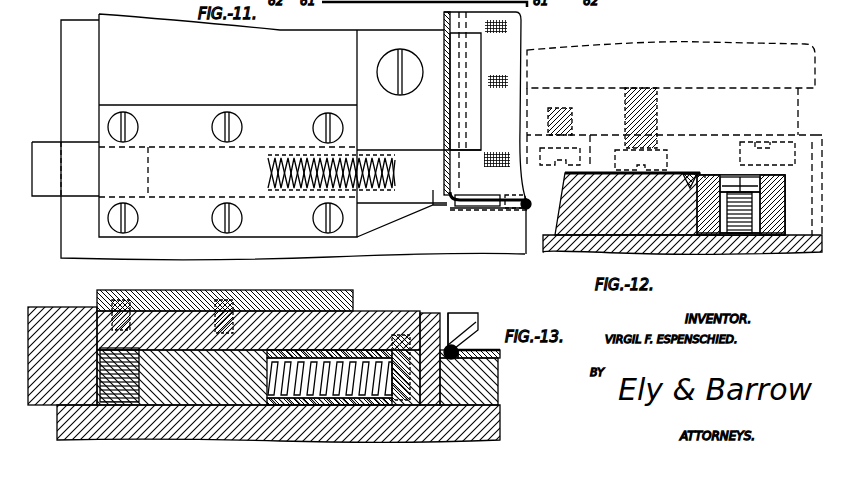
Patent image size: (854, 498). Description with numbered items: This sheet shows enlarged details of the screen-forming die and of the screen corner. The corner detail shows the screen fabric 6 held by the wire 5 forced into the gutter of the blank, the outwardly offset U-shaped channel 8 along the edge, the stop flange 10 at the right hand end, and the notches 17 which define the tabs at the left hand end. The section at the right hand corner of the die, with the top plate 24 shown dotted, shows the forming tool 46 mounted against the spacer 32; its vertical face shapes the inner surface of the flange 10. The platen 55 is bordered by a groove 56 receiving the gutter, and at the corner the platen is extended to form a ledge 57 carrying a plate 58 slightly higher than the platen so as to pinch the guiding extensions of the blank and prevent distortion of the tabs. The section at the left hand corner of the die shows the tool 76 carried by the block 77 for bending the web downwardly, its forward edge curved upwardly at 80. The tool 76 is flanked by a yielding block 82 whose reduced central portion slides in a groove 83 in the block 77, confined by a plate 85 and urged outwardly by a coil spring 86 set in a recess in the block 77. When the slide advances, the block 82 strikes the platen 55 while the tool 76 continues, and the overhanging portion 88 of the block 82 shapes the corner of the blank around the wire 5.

In FIG. 11, the wire binding and clamping rod or wire 5 is at (528, 203).
In FIG. 12, the wire binding and clamping rod or wire 5 is at (709, 168).
In FIG. 11, the screen fabric 6 is at (512, 38).
In FIG. 11, the U-shaped channels 8 is at (483, 206).
In FIG. 12, the flange 10 is at (694, 166).
In FIG. 11, the notches 17 is at (500, 196).
In FIG. 12, the housing 24 is at (772, 50).
In FIG. 12, the spacer 32 is at (598, 129).
In FIG. 12, the forming tool 46 is at (680, 148).
In FIG. 11, the platen 55 is at (533, 221).
In FIG. 12, the platen 55 is at (562, 220).
In FIG. 13, the platen 55 is at (490, 389).
In FIG. 12, the groove 56 is at (694, 178).
In FIG. 13, the groove 56 is at (462, 366).
In FIG. 12, the ledges 57 is at (786, 232).
In FIG. 12, the plates 58 is at (780, 206).
In FIG. 11, the tool 76 is at (470, 62).
In FIG. 13, the tool 76 is at (455, 345).
In FIG. 11, the block 77 is at (290, 125).
In FIG. 13, the block 77 is at (190, 402).
In FIG. 13, the upwardly curved forward edge 80 is at (460, 351).
In FIG. 11, the yielding blocks 82 is at (434, 190).
In FIG. 13, the yielding blocks 82 is at (52, 317).
In FIG. 13, the grooves 83 is at (267, 352).
In FIG. 11, the plates 85 is at (288, 232).
In FIG. 13, the plates 85 is at (352, 296).
In FIG. 11, the coil springs 86 is at (372, 163).
In FIG. 13, the coil springs 86 is at (340, 400).
In FIG. 13, the overhanging portions 88 is at (478, 329).